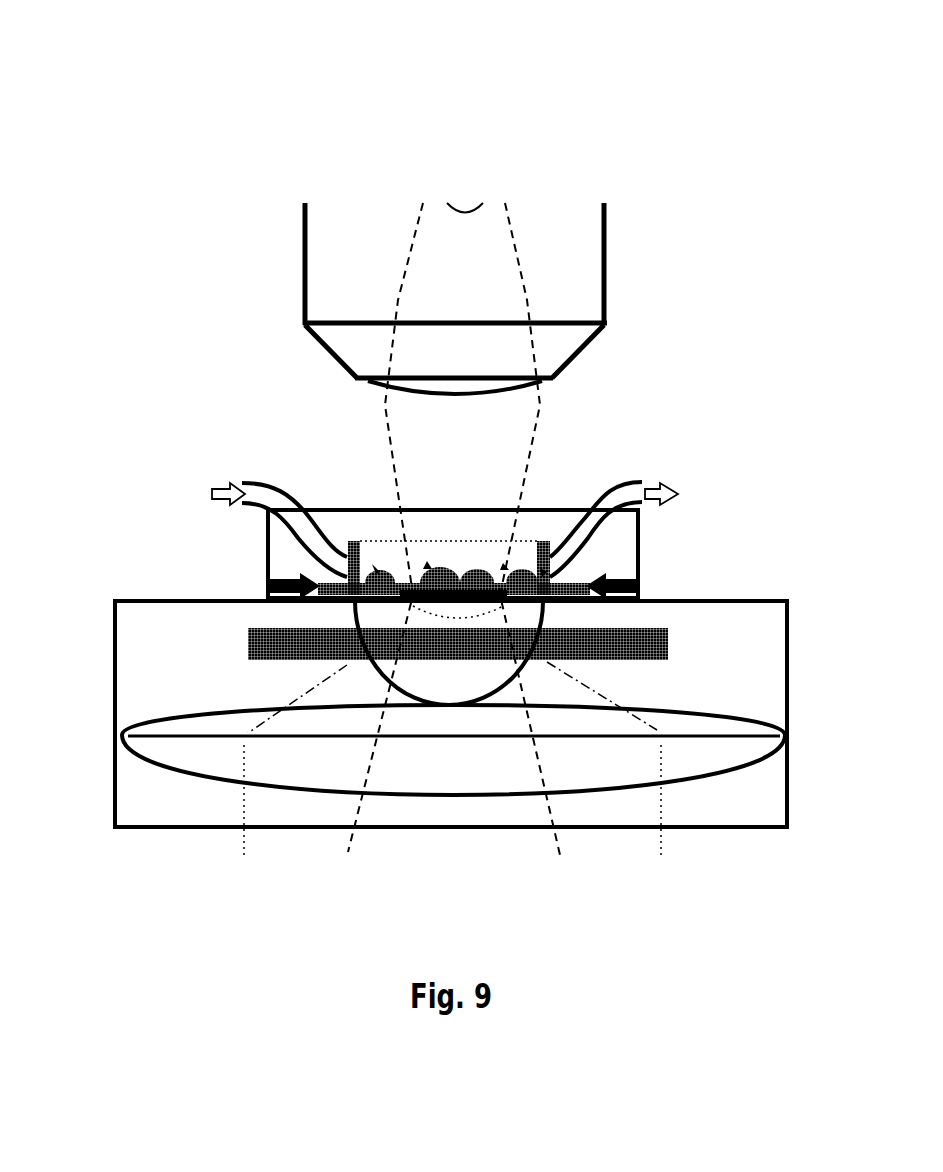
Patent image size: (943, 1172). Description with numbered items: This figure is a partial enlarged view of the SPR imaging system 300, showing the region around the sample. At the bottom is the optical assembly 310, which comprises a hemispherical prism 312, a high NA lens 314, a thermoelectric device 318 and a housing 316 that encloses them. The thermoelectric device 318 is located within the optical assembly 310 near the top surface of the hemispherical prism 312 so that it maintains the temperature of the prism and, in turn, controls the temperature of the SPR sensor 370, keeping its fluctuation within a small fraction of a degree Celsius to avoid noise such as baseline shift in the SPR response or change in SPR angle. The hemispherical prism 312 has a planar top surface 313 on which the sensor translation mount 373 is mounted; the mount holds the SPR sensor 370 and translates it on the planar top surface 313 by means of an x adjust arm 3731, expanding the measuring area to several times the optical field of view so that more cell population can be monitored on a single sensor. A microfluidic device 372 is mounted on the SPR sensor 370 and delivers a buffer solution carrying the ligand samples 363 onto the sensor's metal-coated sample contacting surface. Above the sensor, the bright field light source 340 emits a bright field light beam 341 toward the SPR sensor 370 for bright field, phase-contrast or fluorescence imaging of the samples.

The SPR imaging system 300 is at (205, 182).
The bright field light source 340 is at (625, 233).
The bright field light beam 341 is at (380, 470).
The microfluidic device 372 is at (310, 507).
The sensor translation mount 373 is at (243, 542).
The x adjust arm 3731 is at (270, 587).
The ligand samples 363 is at (453, 533).
The SPR sensor 370 is at (552, 583).
The thermoelectric device 318 is at (668, 637).
The planar top surface 313 is at (393, 600).
The hemispherical prism 312 is at (482, 695).
The high NA lens 314 is at (482, 785).
The housing 316 is at (723, 830).
The optical assembly 310 is at (182, 860).